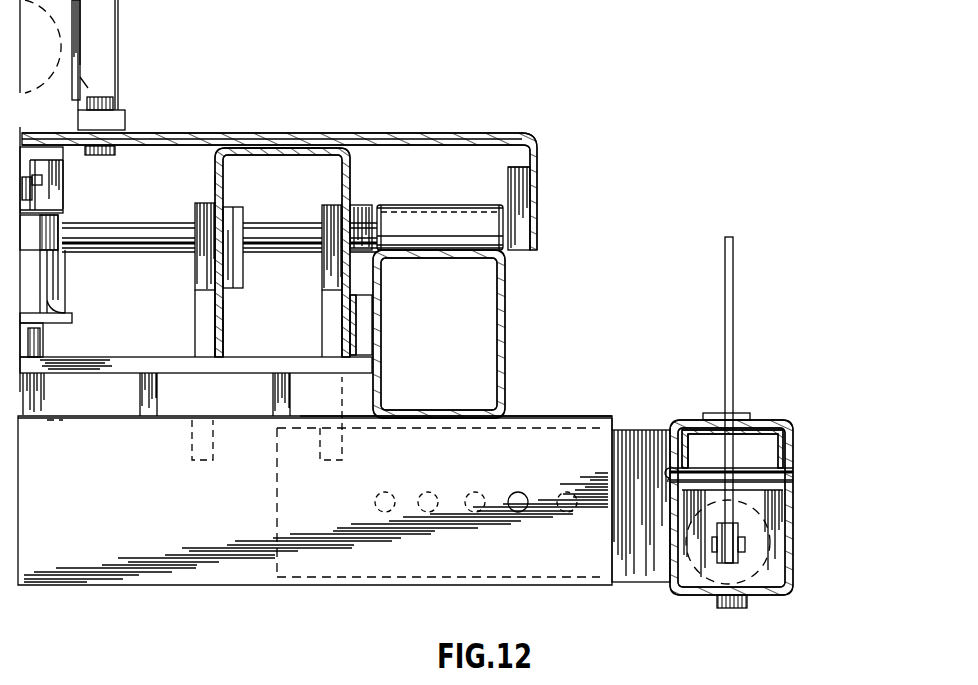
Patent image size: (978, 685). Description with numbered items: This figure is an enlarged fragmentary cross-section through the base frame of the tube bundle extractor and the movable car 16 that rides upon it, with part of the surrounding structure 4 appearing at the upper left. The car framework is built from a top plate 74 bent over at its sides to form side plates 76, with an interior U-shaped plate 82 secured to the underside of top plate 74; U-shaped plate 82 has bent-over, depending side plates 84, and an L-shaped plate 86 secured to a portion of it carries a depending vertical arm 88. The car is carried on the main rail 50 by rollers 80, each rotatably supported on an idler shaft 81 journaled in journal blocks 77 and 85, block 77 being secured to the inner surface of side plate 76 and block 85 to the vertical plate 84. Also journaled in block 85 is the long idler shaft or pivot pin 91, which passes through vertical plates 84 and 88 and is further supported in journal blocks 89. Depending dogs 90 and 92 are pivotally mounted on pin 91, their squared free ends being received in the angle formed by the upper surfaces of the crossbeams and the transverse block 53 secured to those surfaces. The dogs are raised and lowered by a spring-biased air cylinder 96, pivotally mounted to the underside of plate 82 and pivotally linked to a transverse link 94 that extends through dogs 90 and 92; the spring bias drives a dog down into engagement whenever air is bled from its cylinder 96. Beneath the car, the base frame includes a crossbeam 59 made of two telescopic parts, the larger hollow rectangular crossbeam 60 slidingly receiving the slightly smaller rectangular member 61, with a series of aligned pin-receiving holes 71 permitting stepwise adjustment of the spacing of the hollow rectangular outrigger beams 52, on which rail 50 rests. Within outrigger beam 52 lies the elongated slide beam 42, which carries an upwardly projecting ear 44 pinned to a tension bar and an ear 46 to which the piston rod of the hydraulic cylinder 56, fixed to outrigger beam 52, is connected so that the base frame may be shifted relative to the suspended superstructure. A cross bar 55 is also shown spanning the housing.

The machine frame upright 4 is at (130, 67).
The movable car 16 is at (492, 104).
The top plate 74 is at (200, 131).
The interior U-shaped plate 82 is at (180, 152).
The side plate 76 is at (539, 194).
The journal block 77 is at (519, 165).
The depending side plate 84 is at (350, 166).
The depending vertical arm 88 is at (225, 180).
The L-shaped plate 86 is at (285, 156).
The depending dog 92 is at (217, 338).
The long idler shaft or pivot pin 91 is at (121, 256).
The journal block 89 is at (244, 276).
The depending dog 90 is at (320, 302).
The journal block 85 is at (366, 205).
The roller 80 is at (480, 205).
The idler shaft 81 is at (432, 212).
The parallel rail 50 is at (508, 326).
The spring-biased air cylinder 96 is at (52, 243).
The transverse link 94 is at (88, 358).
The transverse block 53 is at (92, 420).
The larger crossbeam 60 is at (570, 417).
The pin-receiving holes 71 is at (518, 492).
The smaller rectangular member 61 is at (658, 428).
The crossbeam 59 is at (624, 428).
The outrigger beam 52 is at (796, 541).
The slide beam 42 is at (783, 445).
The ear 46 is at (730, 462).
The cross bar 55 is at (796, 478).
The hydraulic cylinder 56 is at (763, 522).
The upwardly projecting ear 44 is at (734, 342).